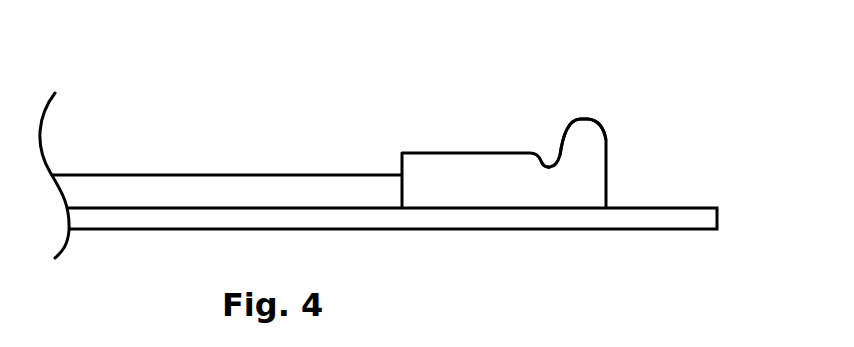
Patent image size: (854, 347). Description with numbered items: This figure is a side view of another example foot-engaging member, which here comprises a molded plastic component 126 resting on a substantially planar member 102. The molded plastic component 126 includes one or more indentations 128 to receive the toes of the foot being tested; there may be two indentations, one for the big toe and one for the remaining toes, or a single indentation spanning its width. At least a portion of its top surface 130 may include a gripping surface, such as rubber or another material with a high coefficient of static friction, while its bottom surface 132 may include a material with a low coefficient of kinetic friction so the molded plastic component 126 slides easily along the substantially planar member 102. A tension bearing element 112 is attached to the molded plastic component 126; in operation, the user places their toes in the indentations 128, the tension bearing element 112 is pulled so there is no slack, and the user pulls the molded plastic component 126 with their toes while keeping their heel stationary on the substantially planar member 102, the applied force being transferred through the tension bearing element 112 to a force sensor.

The substantially planar member 102 is at (720, 218).
The tension bearing element 112 is at (175, 175).
The molded plastic component 126 is at (607, 138).
The indentations 128 is at (548, 165).
The top surface 130 is at (579, 118).
The bottom surface 132 is at (513, 248).